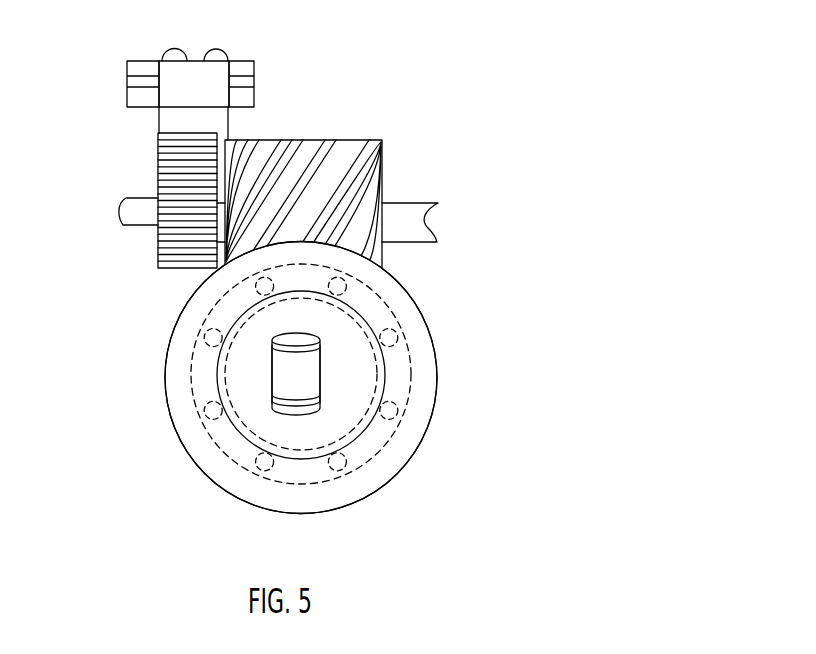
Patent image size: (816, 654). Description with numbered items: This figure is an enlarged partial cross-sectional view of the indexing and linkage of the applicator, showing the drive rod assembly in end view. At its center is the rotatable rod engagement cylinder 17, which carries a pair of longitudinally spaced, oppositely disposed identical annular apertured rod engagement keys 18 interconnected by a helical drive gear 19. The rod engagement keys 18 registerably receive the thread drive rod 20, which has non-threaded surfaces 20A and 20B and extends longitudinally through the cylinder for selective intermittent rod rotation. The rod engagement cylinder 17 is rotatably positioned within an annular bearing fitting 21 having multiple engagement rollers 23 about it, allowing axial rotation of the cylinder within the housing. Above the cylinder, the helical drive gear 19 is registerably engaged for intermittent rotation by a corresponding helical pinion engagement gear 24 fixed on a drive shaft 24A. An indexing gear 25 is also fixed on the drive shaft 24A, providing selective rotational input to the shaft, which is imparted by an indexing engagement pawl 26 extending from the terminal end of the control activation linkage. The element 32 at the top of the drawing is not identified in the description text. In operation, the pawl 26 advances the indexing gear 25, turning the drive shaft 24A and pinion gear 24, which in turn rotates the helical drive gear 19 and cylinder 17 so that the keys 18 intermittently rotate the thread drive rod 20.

The rod engagement cylinder 17 is at (177, 436).
The rod engagement keys 18 is at (290, 462).
The helical drive gear 19 is at (383, 303).
The thread drive rod 20 is at (305, 357).
The non-threaded surface 20A is at (272, 373).
The non-threaded surface 20B is at (320, 373).
The annular bearing fitting 21 is at (167, 352).
The engagement rollers 23 is at (212, 455).
The helical pinion engagement gear 24 is at (383, 157).
The drive shaft 24A is at (438, 218).
The indexing gear 25 is at (172, 255).
The indexing engagement pawl 26 is at (168, 117).
The motor 32 is at (213, 73).